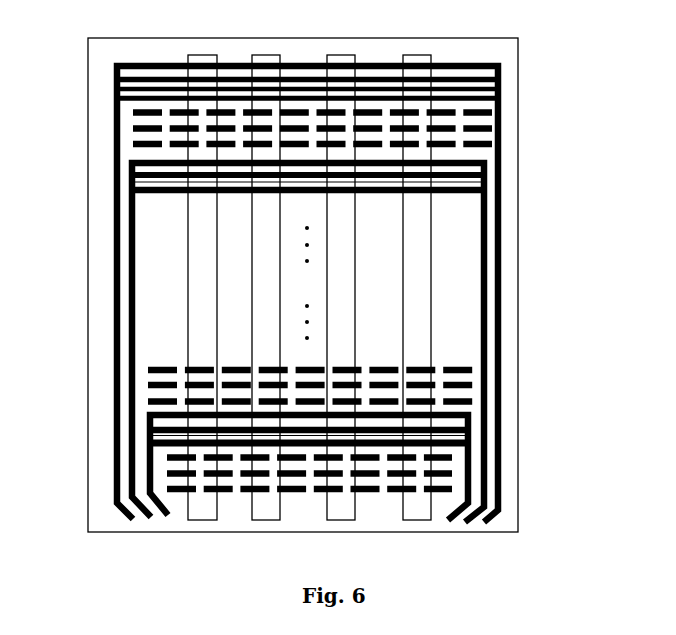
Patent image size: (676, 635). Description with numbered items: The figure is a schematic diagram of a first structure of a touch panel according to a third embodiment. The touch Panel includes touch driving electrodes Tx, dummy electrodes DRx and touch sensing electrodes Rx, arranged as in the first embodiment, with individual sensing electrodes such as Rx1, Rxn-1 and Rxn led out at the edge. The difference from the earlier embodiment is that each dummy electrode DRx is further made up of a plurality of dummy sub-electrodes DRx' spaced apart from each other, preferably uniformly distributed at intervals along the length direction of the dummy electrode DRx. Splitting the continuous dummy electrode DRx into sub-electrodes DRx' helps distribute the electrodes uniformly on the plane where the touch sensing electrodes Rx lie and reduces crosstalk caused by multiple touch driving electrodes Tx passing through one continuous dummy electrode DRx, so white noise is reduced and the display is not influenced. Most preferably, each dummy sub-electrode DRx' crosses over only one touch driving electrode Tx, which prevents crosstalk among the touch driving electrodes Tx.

The touch sensing electrodes Rx is at (443, 100).
The dummy electrodes DRx is at (276, 129).
The dummy sub-electrodes DRx' is at (362, 168).
The touch driving electrodes Tx is at (340, 520).
The first receiving electrode Rx1 is at (450, 518).
The (n-1)th receiving electrode Rxn-1 is at (467, 517).
The nth receiving electrode Rxn is at (483, 517).
The touch panel Panel is at (303, 285).